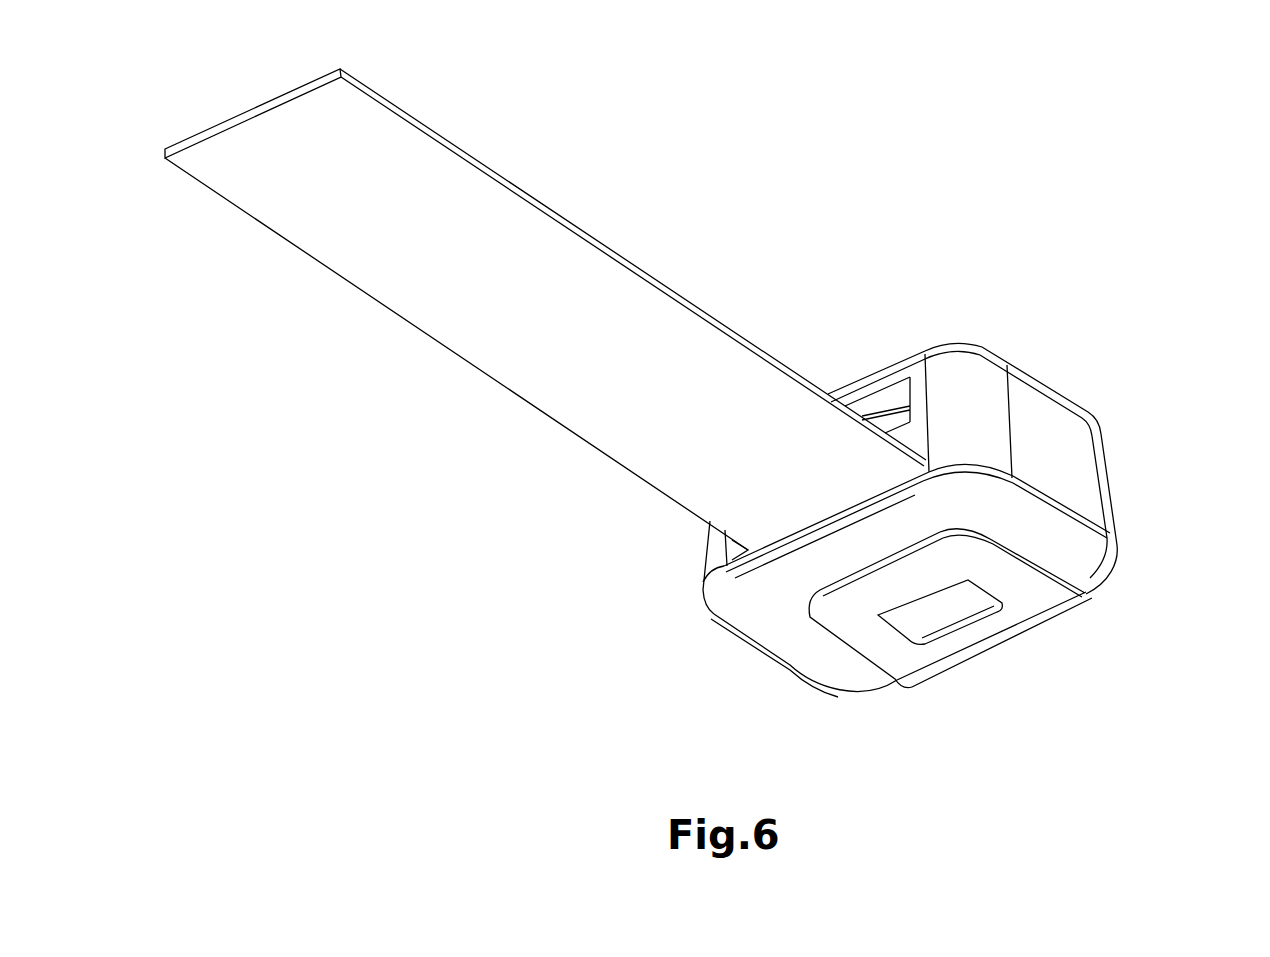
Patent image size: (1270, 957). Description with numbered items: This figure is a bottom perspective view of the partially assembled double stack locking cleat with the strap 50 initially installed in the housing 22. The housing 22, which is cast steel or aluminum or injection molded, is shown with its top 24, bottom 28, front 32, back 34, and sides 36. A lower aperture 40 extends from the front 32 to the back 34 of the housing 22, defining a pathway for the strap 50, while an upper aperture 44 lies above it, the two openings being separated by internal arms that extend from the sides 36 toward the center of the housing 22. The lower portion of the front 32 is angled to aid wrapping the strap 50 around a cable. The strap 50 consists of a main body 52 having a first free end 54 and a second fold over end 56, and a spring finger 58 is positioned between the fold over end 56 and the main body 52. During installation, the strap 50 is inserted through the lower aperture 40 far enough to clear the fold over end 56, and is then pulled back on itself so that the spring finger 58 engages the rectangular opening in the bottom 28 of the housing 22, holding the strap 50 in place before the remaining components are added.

The housing 22 is at (1088, 415).
The top 24 is at (1040, 377).
The bottom 28 is at (1070, 562).
The front 32 is at (942, 384).
The back 34 is at (1113, 515).
The sides 36 is at (1052, 462).
The lower aperture 40 is at (913, 446).
The upper aperture 44 is at (888, 402).
The strap 50 is at (525, 232).
The main body 52 is at (610, 282).
The first free end 54 is at (347, 155).
The fold over end 56 is at (857, 627).
The spring finger 58 is at (943, 610).